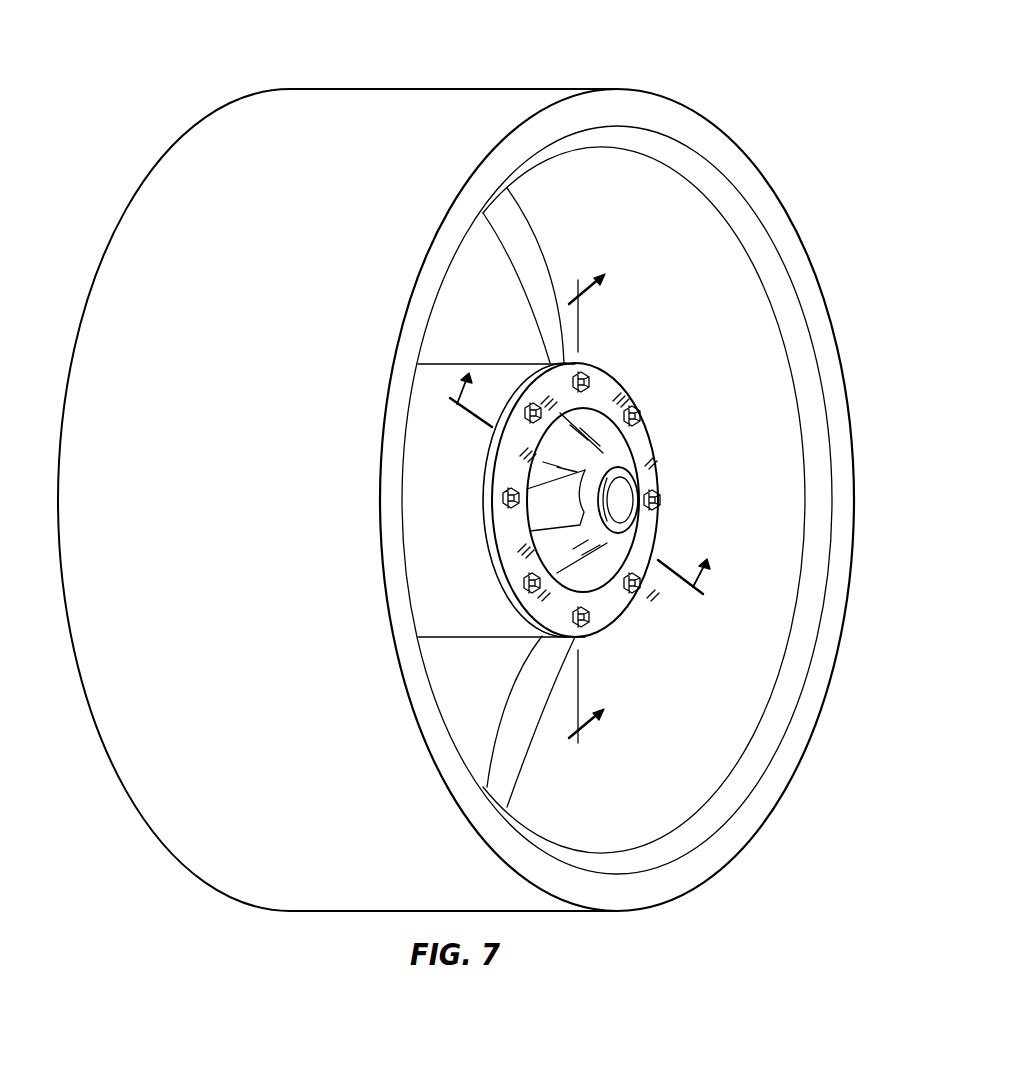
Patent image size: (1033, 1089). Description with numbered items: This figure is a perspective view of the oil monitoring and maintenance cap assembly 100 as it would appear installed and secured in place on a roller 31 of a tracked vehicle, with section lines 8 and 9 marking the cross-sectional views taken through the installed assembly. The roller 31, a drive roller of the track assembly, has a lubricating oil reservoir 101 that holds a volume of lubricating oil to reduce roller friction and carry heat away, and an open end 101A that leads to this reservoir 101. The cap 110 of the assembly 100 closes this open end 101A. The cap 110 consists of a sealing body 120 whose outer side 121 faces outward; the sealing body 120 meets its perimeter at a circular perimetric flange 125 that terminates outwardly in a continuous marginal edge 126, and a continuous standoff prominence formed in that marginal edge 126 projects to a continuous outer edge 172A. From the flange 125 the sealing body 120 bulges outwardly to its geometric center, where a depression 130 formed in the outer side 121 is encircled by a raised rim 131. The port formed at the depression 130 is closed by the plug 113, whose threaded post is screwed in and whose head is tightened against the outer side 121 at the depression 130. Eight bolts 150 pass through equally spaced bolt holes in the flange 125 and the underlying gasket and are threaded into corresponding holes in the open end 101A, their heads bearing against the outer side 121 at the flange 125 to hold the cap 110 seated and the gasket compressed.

The roller 31 is at (735, 140).
The cap assembly 100 is at (667, 355).
The lubricating oil reservoir 101 is at (440, 356).
The open end 101A is at (503, 553).
The cap 110 is at (482, 458).
The plug 113 is at (624, 467).
The sealing body 120 is at (613, 566).
The outer side 121 is at (598, 588).
The perimetric flange 125 is at (558, 392).
The marginal edge 126 is at (660, 514).
The depression 130 is at (656, 512).
The raised rim 131 is at (646, 492).
The bolts 150 is at (585, 372).
The continuous outer edge 172A is at (486, 481).
The section line 8- 8 is at (594, 503).
The section line 9- 9 is at (575, 491).